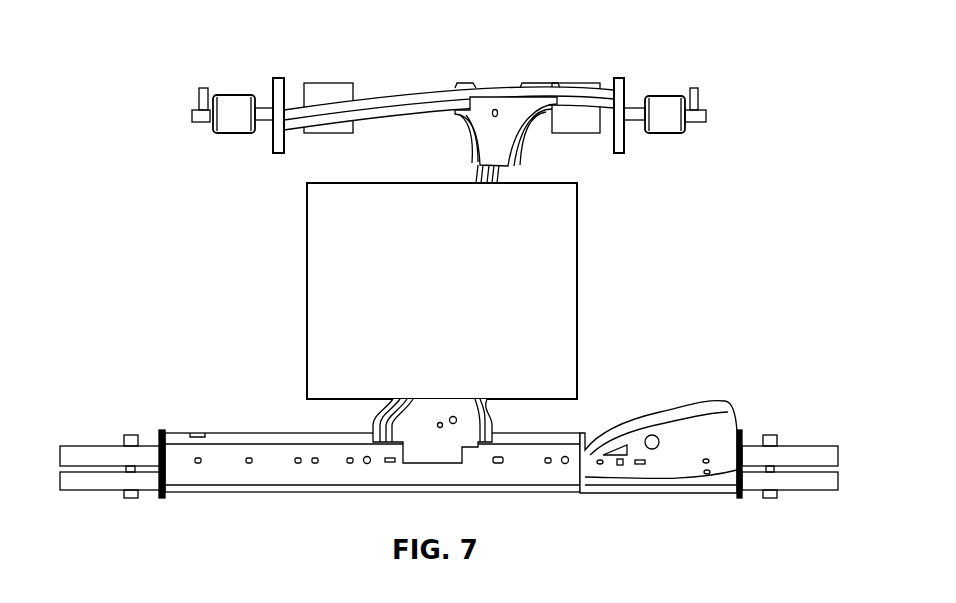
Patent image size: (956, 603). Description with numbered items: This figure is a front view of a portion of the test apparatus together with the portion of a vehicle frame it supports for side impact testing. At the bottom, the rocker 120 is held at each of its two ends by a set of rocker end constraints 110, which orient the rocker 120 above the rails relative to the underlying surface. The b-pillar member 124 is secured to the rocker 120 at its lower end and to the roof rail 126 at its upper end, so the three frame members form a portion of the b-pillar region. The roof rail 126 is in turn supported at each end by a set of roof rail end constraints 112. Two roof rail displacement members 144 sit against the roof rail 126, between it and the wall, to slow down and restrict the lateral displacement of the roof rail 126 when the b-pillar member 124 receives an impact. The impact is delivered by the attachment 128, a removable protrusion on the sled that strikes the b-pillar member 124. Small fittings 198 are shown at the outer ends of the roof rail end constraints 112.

The rocker end constraints 110 is at (118, 430).
The roof rail end constraints 112 is at (243, 80).
The rocker 120 is at (268, 494).
The b-pillar member 124 is at (388, 421).
The roof rail 126 is at (414, 92).
The attachment 128 is at (307, 242).
The roof rail displacement members 144 is at (328, 83).
The peg 198 is at (198, 97).